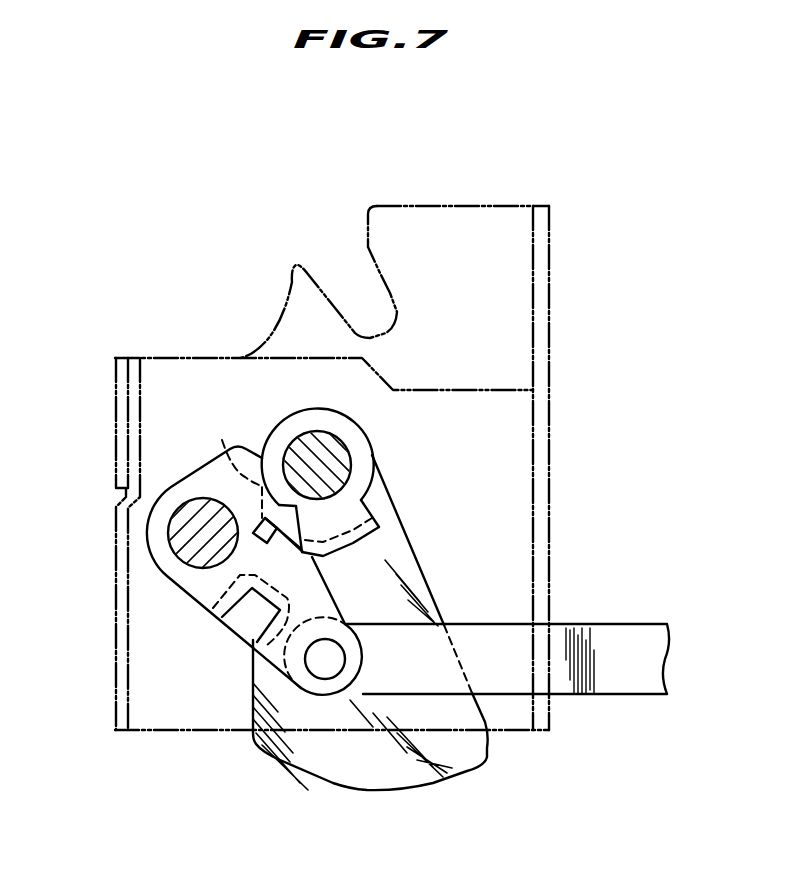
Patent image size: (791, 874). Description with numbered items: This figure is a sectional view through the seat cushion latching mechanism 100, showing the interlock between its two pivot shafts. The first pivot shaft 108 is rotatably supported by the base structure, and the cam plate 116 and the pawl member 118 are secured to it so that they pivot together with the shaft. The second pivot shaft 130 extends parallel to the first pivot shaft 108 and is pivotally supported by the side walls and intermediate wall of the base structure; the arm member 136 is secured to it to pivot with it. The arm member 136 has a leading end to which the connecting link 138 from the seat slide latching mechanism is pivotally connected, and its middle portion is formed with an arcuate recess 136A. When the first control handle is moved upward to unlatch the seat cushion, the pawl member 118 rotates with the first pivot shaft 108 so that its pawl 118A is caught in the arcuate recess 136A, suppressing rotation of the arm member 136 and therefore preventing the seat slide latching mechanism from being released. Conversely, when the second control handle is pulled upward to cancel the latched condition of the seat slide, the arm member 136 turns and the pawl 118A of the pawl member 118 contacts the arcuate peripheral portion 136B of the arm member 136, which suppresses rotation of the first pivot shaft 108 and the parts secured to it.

The seat cushion latching mechanism 100 is at (583, 208).
The first pivot shaft 108 is at (344, 447).
The cam plate 116 is at (378, 790).
The pawl member 118 is at (288, 418).
The pawl 118A is at (405, 539).
The second pivot shaft 130 is at (168, 534).
The arm member 136 is at (203, 474).
The arcuate recess 136A is at (258, 543).
The arcuate peripheral portion 136B is at (222, 440).
The connecting link 138 is at (608, 694).